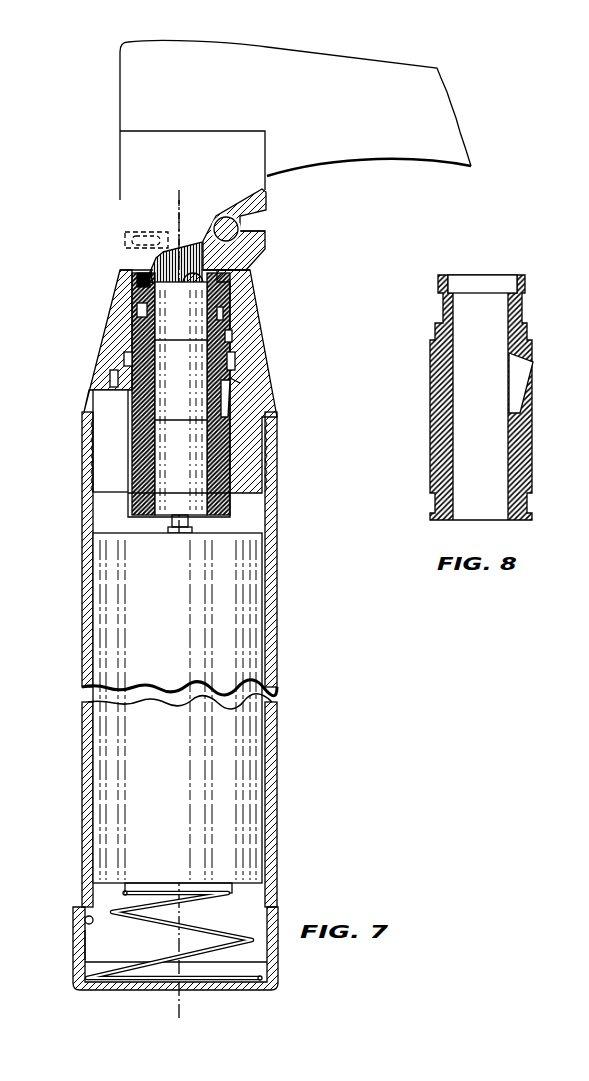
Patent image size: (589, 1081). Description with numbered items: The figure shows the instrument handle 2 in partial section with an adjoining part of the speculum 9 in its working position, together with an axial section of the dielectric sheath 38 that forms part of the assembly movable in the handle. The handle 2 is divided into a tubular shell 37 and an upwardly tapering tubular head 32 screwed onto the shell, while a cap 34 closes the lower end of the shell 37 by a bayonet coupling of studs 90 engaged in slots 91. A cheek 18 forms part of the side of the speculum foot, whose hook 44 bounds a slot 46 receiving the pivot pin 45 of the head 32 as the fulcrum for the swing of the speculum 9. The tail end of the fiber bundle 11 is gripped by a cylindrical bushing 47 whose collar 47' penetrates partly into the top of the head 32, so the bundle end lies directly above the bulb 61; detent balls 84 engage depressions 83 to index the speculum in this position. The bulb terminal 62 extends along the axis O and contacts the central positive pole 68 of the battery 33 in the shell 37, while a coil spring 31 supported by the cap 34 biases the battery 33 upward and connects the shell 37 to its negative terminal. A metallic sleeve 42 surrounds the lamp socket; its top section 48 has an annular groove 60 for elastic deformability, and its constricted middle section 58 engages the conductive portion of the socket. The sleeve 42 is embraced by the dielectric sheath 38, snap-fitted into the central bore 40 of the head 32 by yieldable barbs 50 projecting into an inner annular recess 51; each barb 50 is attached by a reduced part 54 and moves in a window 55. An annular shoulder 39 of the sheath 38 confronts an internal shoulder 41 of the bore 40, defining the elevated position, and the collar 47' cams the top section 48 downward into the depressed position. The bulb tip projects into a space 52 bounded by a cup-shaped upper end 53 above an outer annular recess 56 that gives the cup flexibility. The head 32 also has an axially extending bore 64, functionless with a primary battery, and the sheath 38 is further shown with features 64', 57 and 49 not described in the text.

In FIG. 7, the speculum 9 is at (357, 57).
In FIG. 7, the cheek 18 is at (192, 133).
In FIG. 7, the detent balls 84 is at (140, 220).
In FIG. 7, the depressions 83 is at (125, 233).
In FIG. 7, the fiber bundle 11 is at (176, 236).
In FIG. 7, the cylindrical bushing 47 is at (181, 228).
In FIG. 7, the slot 46 is at (268, 214).
In FIG. 7, the pivot pin 45 is at (239, 232).
In FIG. 7, the hook 44 is at (262, 252).
In FIG. 7, the collar 47' is at (114, 264).
In FIG. 7, the top section 48 is at (140, 285).
In FIG. 7, the bulb 61 is at (224, 300).
In FIG. 7, the annular shoulder 39 is at (118, 338).
In FIG. 8, the annular shoulder 39 is at (432, 332).
In FIG. 7, the annular groove 60 is at (145, 310).
In FIG. 7, the central bore 40 is at (222, 312).
In FIG. 7, the constricted middle section 58 is at (160, 360).
In FIG. 7, the internal shoulder 41 is at (230, 336).
In FIG. 7, the tubular head 32 is at (105, 372).
In FIG. 7, the inner annular recess 51 is at (240, 368).
In FIG. 7, the yieldable barbs 50 is at (232, 383).
In FIG. 8, the yieldable barbs 50 is at (531, 368).
In FIG. 7, the sleeve recess 64' is at (85, 438).
In FIG. 7, the window 55 is at (226, 414).
In FIG. 8, the window 55 is at (535, 395).
In FIG. 7, the metallic sleeve 42 is at (165, 447).
In FIG. 7, the bore 64 is at (157, 659).
In FIG. 7, the tubular sheath 38 is at (228, 452).
In FIG. 8, the tubular sheath 38 is at (430, 417).
In FIG. 7, the bottom flange 57 is at (205, 497).
In FIG. 7, the central positive pole 68 is at (172, 535).
In FIG. 7, the terminal 62 is at (188, 530).
In FIG. 7, the tubular shell 37 is at (82, 699).
In FIG. 7, the handle 2 is at (277, 704).
In FIG. 7, the battery 33 is at (252, 790).
In FIG. 7, the studs 90 is at (84, 920).
In FIG. 7, the slots 91 is at (90, 945).
In FIG. 7, the coil spring 31 is at (212, 945).
In FIG. 7, the cap 34 is at (272, 972).
In FIG. 7, the axis O is at (180, 1005).
In FIG. 8, the space 52 is at (465, 278).
In FIG. 8, the cup-shaped upper end 53 is at (436, 283).
In FIG. 8, the outer annular recess 56 is at (522, 316).
In FIG. 8, the reduced part 54 is at (522, 417).
In FIG. 8, the bottom flange 49 is at (432, 507).